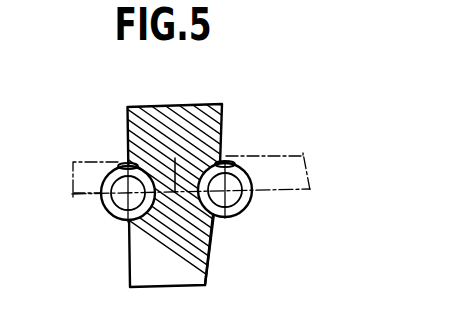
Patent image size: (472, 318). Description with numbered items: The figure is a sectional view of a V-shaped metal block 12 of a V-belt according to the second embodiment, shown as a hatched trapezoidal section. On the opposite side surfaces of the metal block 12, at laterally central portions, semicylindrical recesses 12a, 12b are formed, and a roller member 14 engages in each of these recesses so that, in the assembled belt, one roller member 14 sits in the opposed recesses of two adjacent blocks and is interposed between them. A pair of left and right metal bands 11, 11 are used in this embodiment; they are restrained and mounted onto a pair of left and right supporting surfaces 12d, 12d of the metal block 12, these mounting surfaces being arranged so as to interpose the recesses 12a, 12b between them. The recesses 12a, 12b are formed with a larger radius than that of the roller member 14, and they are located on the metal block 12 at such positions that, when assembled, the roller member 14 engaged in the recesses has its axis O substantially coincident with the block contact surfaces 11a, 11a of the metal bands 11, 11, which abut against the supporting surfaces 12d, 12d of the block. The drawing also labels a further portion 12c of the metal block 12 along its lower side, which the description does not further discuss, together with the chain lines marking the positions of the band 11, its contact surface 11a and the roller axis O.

The metal band 11 is at (294, 193).
The block contact surface 11a is at (82, 197).
The V-shaped metal block 12 is at (148, 115).
The semicylindrical recess 12a is at (121, 163).
The semicylindrical recess 12b is at (228, 160).
The inclined surface 12c is at (210, 263).
The supporting surface 12d is at (173, 160).
The roller member 14 is at (118, 212).
The axis O is at (128, 193).